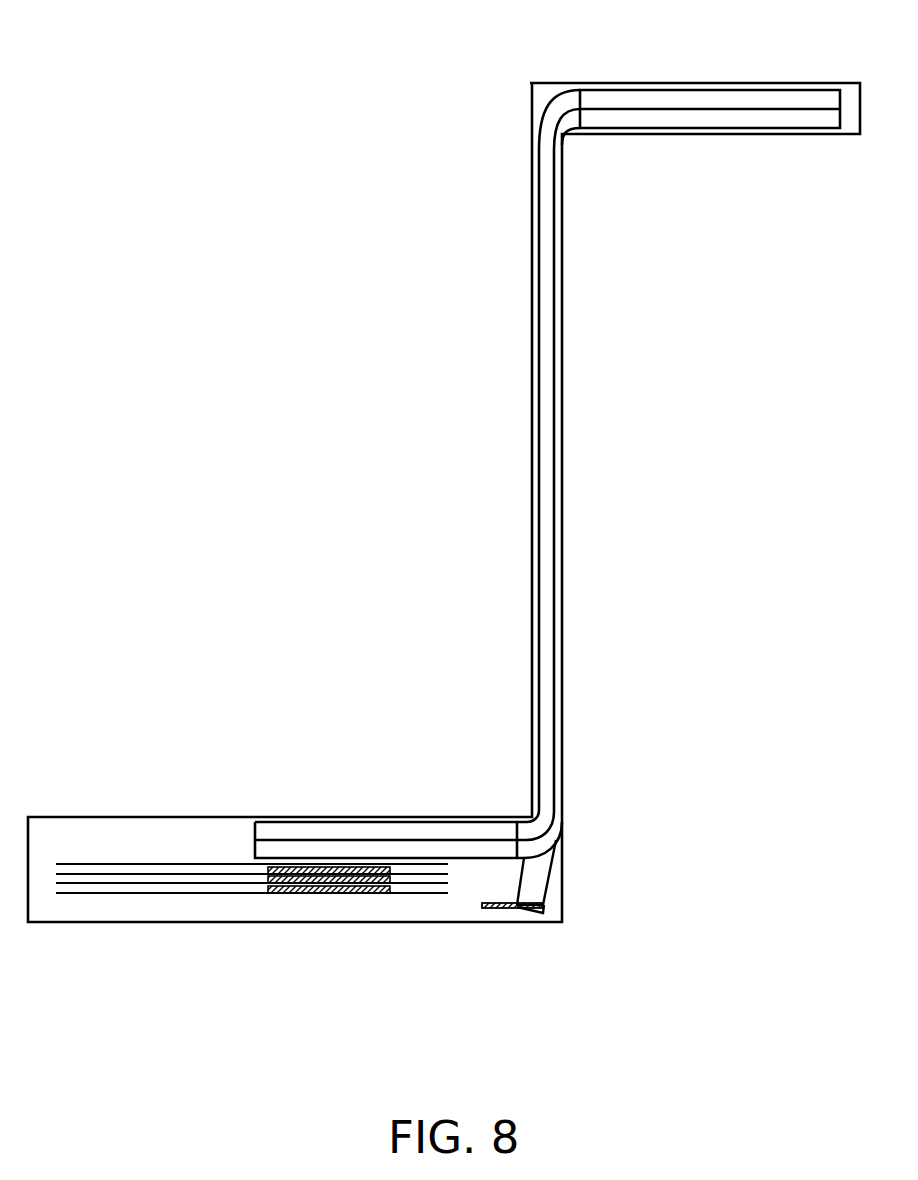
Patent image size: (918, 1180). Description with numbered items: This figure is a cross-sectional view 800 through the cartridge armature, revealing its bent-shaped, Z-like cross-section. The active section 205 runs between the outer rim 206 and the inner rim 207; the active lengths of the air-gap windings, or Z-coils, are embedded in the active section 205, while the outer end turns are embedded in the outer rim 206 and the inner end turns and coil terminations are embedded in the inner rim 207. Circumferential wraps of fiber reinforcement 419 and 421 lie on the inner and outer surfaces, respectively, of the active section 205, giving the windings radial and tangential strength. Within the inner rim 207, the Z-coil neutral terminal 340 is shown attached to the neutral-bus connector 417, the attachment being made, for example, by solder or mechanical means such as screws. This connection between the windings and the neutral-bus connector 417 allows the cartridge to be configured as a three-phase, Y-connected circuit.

The cross-sectional view 800 is at (349, 389).
The outer rim 206 is at (702, 83).
The inner rim 207 is at (47, 815).
The active section 205 is at (548, 474).
The circumferential wrap of fiber reinforcement 419 is at (533, 362).
The circumferential wrap of fiber reinforcement 421 is at (560, 603).
The Z-coil neutral terminal 340 is at (563, 871).
The neutral-bus connector 417 is at (508, 913).